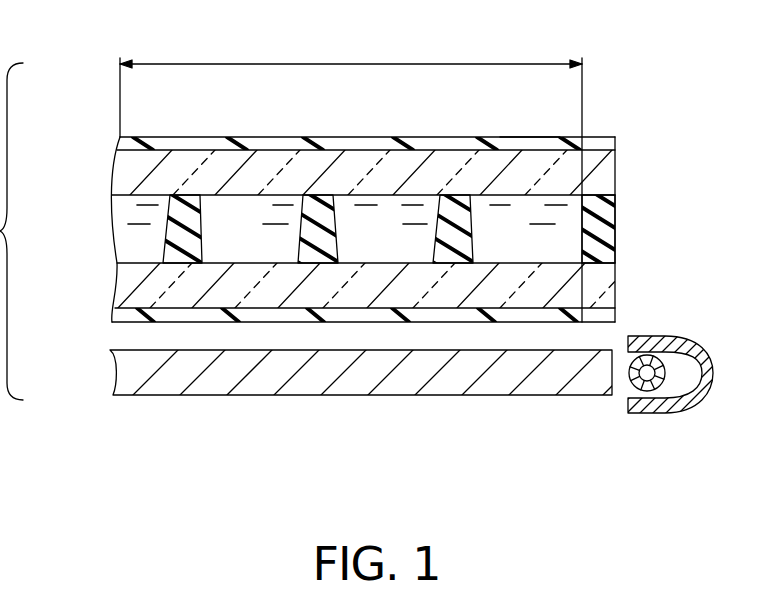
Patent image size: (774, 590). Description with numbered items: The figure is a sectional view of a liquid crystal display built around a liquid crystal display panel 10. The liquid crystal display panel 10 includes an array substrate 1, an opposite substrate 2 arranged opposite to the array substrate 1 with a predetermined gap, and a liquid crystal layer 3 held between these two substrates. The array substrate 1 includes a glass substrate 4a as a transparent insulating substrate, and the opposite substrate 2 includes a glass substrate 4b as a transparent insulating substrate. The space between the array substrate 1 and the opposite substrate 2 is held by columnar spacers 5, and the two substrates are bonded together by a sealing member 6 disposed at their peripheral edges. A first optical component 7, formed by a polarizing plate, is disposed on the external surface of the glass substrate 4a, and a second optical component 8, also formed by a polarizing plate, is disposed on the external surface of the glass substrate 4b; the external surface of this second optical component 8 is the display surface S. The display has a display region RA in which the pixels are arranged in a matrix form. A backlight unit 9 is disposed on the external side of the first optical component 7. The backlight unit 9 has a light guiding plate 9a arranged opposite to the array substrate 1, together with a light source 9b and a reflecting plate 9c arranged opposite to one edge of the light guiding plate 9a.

The liquid crystal display panel 10 is at (645, 127).
The array substrate 1 is at (95, 274).
The opposite substrate 2 is at (93, 184).
The liquid crystal layer 3 is at (118, 235).
The glass substrate 4a is at (122, 297).
The glass substrate 4b is at (113, 167).
The columnar spacers 5 is at (193, 203).
The sealing member 6 is at (605, 235).
The first optical component 7 is at (117, 313).
The second optical component 8 is at (123, 145).
The backlight unit 9 is at (560, 418).
The light guiding plate 9a is at (115, 373).
The light source 9b is at (672, 395).
The reflecting plate 9c is at (680, 340).
The display region RA is at (351, 178).
The display surface S is at (528, 137).